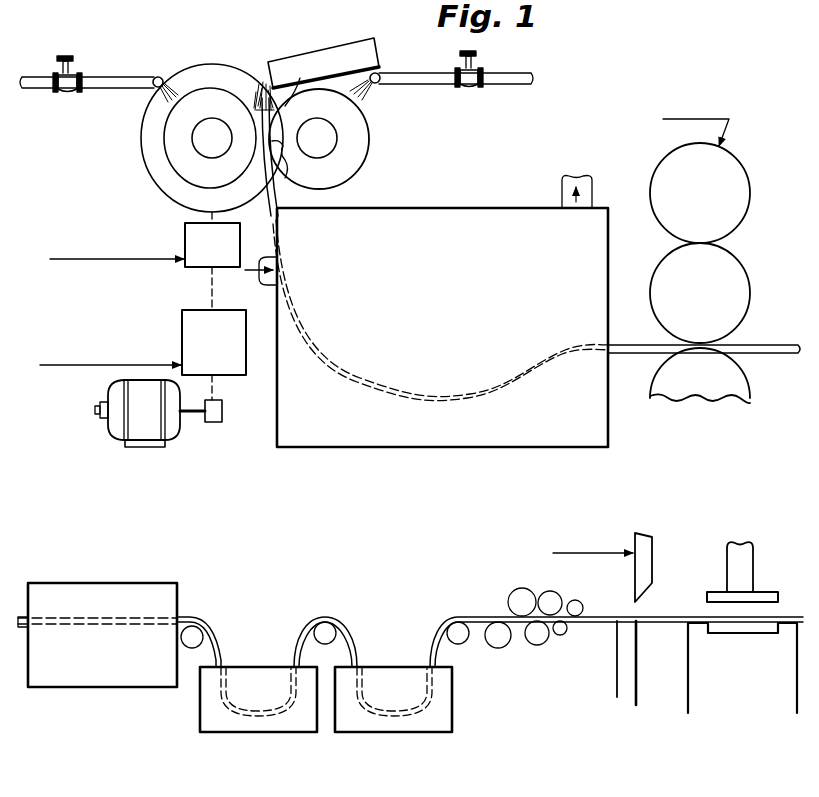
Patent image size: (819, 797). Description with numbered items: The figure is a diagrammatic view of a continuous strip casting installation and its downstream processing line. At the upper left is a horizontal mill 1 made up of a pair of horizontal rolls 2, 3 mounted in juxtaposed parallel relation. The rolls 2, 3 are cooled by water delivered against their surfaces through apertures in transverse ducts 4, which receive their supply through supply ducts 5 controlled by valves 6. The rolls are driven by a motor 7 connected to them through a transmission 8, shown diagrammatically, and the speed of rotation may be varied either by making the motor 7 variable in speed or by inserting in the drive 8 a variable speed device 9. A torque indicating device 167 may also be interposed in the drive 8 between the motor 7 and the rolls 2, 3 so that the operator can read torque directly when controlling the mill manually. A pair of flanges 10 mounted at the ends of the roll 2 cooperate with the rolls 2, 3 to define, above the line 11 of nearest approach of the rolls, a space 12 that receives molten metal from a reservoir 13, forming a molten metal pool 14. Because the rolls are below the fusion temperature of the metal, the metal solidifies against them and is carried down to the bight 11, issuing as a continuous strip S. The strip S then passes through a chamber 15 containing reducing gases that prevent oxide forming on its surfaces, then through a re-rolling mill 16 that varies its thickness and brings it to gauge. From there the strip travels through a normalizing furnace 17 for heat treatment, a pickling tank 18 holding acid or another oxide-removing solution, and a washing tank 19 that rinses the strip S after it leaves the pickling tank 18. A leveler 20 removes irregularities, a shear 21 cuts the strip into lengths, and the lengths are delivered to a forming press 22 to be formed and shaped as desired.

The horizontal mill 1 is at (371, 138).
The horizontal roll 2 is at (163, 126).
The horizontal roll 3 is at (357, 155).
The transverse duct 4 is at (145, 78).
The supply duct 5 is at (95, 77).
The valve 6 is at (63, 93).
The motor 7 is at (117, 427).
The transmission 8 is at (212, 290).
The variable speed device 9 is at (236, 372).
The flange 10 is at (228, 76).
The line of nearest approach 11 is at (291, 172).
The space 12 is at (256, 98).
The reservoir 13 is at (333, 53).
The molten metal pool 14 is at (300, 82).
The chamber 15 is at (348, 432).
The re-rolling mill 16 is at (738, 285).
The normalizing furnace 17 is at (126, 593).
The pickling tank 18 is at (246, 678).
The washing tank 19 is at (381, 678).
The leveler 20 is at (541, 649).
The shear 21 is at (647, 569).
The forming press 22 is at (707, 681).
The torque indicating device 167 is at (193, 232).
The continuous strip S is at (278, 209).